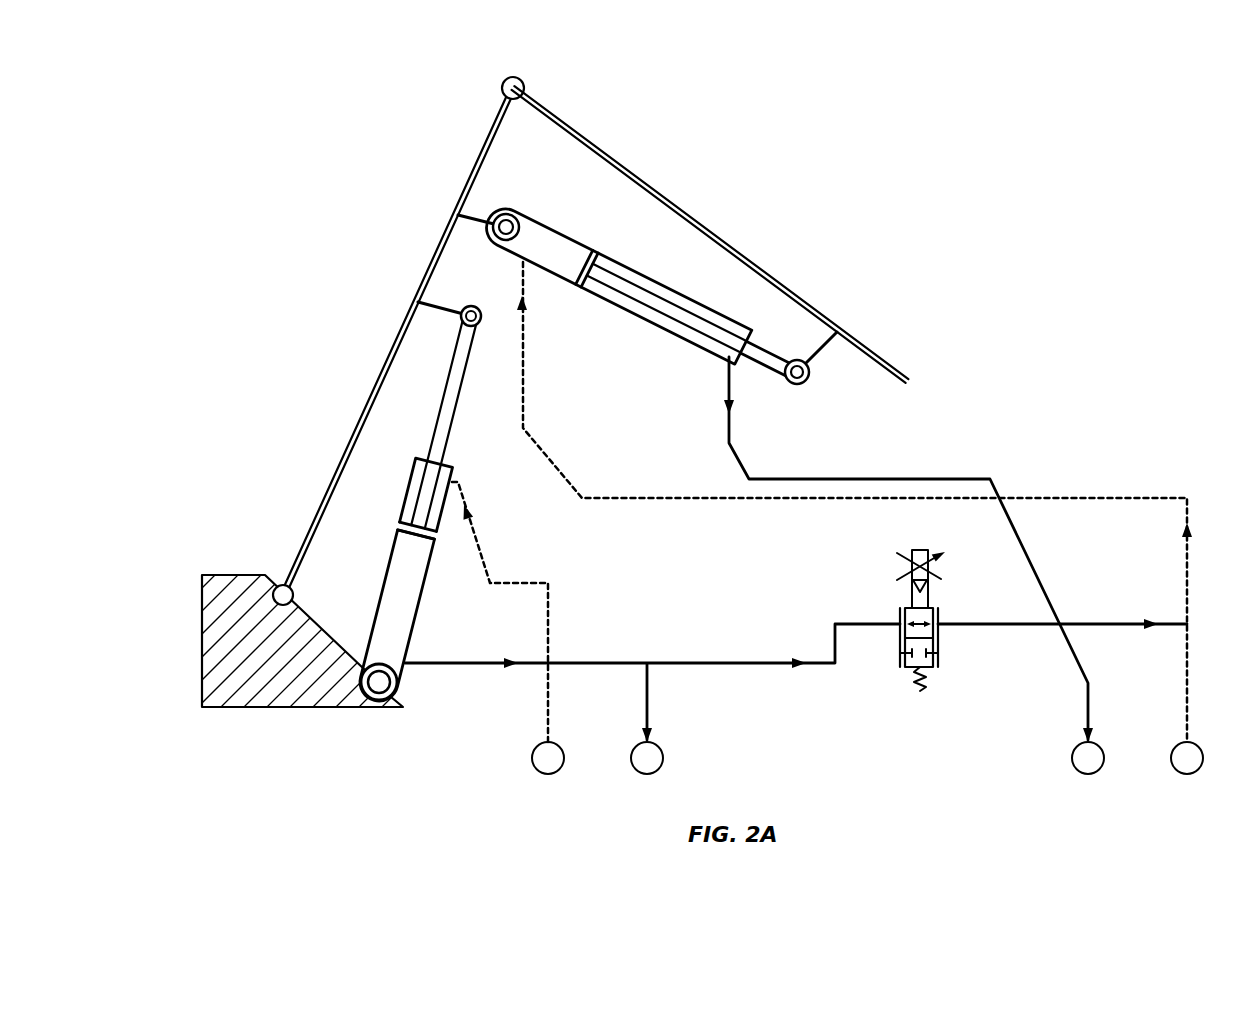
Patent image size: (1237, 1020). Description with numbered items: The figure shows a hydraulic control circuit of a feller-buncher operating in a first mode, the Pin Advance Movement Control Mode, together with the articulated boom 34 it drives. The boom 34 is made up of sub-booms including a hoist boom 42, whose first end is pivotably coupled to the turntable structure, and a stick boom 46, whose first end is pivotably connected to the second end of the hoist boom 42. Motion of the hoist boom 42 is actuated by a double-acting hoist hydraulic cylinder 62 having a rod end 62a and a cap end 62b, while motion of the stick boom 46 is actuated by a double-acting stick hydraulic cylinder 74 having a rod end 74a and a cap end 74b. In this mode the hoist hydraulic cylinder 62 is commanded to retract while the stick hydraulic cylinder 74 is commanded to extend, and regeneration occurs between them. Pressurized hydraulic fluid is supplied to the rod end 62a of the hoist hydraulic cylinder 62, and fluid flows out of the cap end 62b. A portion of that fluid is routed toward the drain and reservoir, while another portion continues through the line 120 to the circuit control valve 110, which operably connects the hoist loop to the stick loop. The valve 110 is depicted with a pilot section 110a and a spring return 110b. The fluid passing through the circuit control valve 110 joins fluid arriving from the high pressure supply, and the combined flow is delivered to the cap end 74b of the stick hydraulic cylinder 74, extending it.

The boom 34 is at (318, 116).
The hoist boom 42 is at (378, 380).
The stick boom 46 is at (748, 257).
The hoist hydraulic cylinder 62 is at (392, 575).
The rod end 62a is at (410, 472).
The cap end 62b is at (363, 663).
The stick hydraulic cylinder 74 is at (627, 260).
The rod end 74a is at (743, 315).
The cap end 74b is at (550, 220).
The circuit control valve 110 is at (876, 611).
The valve pilot port 110a is at (950, 611).
The valve spring 110b is at (950, 664).
The line 120 is at (733, 663).